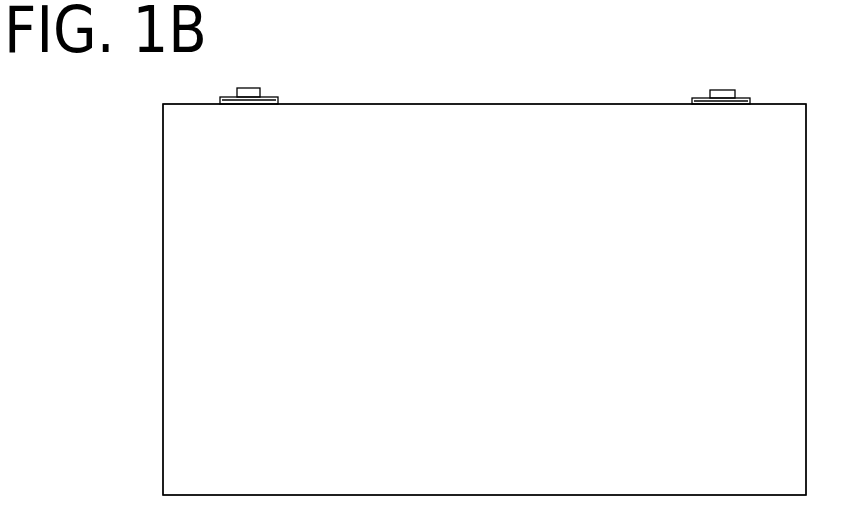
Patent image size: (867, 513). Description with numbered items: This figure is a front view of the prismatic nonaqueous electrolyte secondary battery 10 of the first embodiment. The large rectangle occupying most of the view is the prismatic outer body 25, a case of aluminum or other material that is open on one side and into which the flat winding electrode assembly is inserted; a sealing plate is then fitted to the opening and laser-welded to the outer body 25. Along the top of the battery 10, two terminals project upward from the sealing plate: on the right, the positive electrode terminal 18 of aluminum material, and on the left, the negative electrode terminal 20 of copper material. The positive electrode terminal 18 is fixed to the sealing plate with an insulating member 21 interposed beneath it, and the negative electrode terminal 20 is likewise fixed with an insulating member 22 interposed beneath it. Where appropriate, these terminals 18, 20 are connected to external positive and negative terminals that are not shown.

The nonaqueous electrolyte secondary battery 10 is at (126, 110).
The positive electrode terminal 18 is at (713, 91).
The negative electrode terminal 20 is at (248, 91).
The insulating member 21 is at (740, 98).
The insulating member 22 is at (274, 97).
The prismatic outer body 25 is at (213, 260).